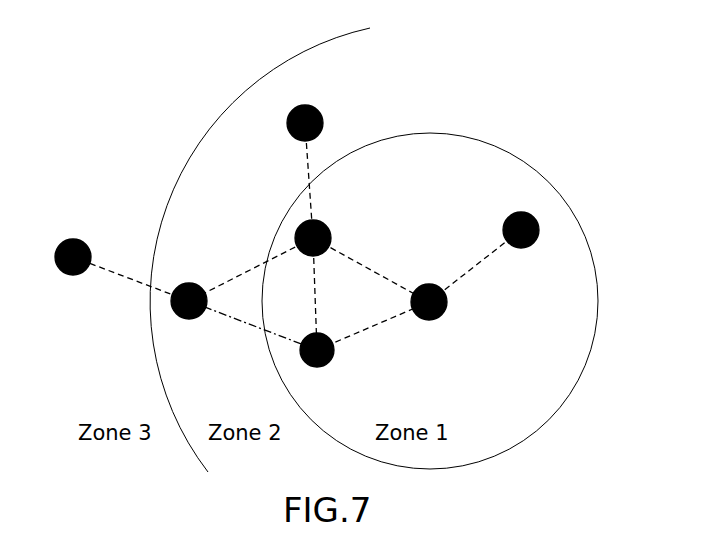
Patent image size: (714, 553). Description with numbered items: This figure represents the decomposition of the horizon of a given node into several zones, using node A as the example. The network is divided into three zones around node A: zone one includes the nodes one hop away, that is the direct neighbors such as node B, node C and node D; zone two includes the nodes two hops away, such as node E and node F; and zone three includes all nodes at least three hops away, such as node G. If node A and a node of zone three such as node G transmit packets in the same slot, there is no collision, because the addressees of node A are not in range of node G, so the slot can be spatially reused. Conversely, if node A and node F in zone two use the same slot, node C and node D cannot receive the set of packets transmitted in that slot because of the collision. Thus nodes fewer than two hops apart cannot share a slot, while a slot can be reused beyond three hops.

The node A is at (442, 314).
The node B is at (530, 245).
The node C is at (326, 225).
The node D is at (331, 360).
The node E is at (318, 110).
The node F is at (188, 283).
The node G is at (78, 240).